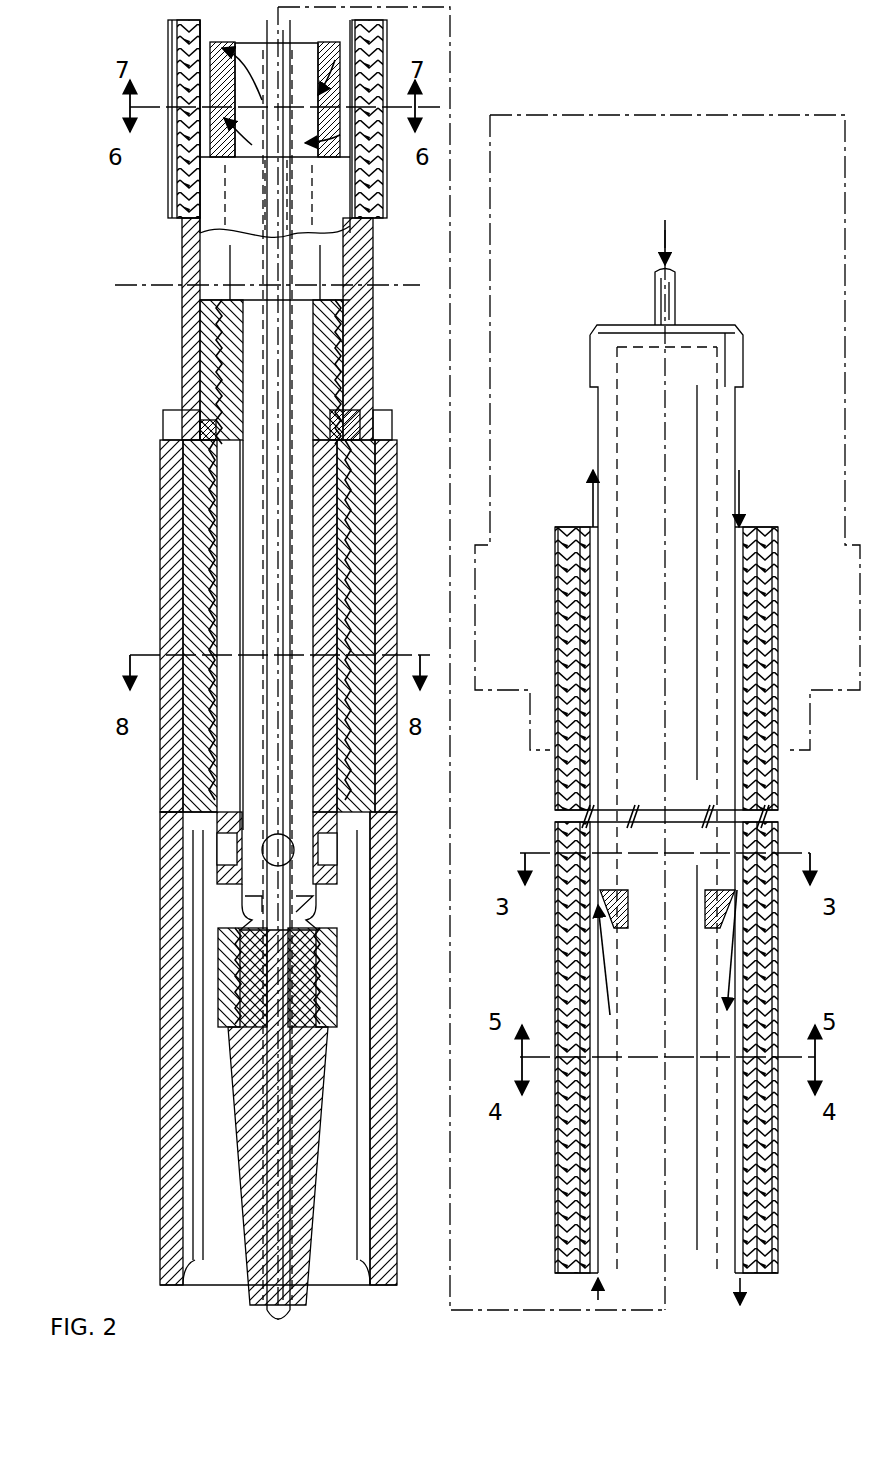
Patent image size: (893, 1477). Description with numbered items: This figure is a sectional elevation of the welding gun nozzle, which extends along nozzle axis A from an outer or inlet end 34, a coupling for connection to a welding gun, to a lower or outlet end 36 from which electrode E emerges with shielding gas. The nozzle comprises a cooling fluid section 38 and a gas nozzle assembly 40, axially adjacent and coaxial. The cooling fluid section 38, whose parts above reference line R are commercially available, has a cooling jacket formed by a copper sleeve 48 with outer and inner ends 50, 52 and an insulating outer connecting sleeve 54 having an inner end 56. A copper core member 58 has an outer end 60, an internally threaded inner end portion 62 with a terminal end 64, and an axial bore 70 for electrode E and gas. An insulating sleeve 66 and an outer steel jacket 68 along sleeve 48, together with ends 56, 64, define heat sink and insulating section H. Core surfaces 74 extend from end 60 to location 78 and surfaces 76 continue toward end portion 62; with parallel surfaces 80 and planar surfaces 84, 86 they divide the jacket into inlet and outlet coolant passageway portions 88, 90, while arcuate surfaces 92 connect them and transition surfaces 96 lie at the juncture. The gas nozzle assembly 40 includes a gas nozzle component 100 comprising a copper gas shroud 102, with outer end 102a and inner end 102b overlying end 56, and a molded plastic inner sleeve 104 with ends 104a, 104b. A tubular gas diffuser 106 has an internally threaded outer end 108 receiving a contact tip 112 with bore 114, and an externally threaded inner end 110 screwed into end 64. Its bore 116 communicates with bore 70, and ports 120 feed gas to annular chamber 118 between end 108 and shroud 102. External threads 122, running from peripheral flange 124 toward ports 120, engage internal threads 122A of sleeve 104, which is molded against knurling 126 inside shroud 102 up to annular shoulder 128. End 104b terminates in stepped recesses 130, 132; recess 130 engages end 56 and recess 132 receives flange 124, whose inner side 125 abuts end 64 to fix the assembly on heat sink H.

The outer or inlet end 34 is at (690, 100).
The lower or outlet end 36 is at (348, 1298).
The cooling fluid section 38 is at (105, 150).
The gas nozzle assembly 40 is at (70, 385).
The copper sleeve 48 is at (365, 115).
The axially outer end of sleeve 48 50 is at (580, 528).
The axially inner end of sleeve 48 52 is at (360, 182).
The outer connecting sleeve 54 is at (195, 300).
The inner end of sleeve 54 56 is at (185, 405).
The copper core member 58 is at (588, 345).
The axially outer end of core member 60 is at (745, 368).
The axially inner end portion of core member 62 is at (215, 190).
The terminal end of end portion 62 64 is at (352, 425).
The insulating sleeve 66 is at (388, 92).
The outer steel jacket 68 is at (385, 42).
The bore 70 is at (236, 240).
The first pair of outer surfaces 74 is at (690, 520).
The second pair of outer surfaces 76 is at (260, 42).
The location intermediate outer and inner ends 78 is at (580, 855).
The opposed parallel surfaces 80 is at (598, 435).
The planar surface 84 is at (598, 1250).
The planar surface 86 is at (710, 1180).
The inlet coolant passageway portion 88 is at (385, 27).
The outlet coolant passageway portion 90 is at (168, 27).
The arcuate surfaces 92 is at (325, 142).
The transition surfaces 96 is at (715, 905).
The gas nozzle component 100 is at (160, 620).
The outer cylindrical gas shroud 102 is at (165, 900).
The axially outer end of shroud 102a is at (165, 1265).
The axially inner end of shroud 102b is at (165, 455).
The inner sleeve 104 is at (350, 597).
The axially outer end of sleeve 104 104a is at (200, 808).
The axially inner end of sleeve 104 104b is at (160, 418).
The tubular gas diffuser 106 is at (330, 748).
The internally threaded axially outer end of diffuser 108 is at (225, 980).
The externally threaded axially inner end of diffuser 110 is at (335, 342).
The copper contact tip 112 is at (240, 1050).
The bore of contact tip 114 is at (280, 1120).
The bore of diffuser 116 is at (245, 780).
The annular chamber 118 is at (355, 918).
The radially extending ports 120 is at (342, 848).
The external threads 122 is at (345, 552).
The internal threads of sleeve 104 122A is at (190, 575).
The peripheral flange 124 is at (350, 492).
The axially inner side of flange 125 is at (178, 437).
The knurling 126 is at (180, 748).
The annular shoulder 128 is at (185, 530).
The recess 130 is at (355, 425).
The recess 132 is at (345, 462).
The electrode E is at (285, 262).
The nozzle axis A is at (450, 772).
The reference line R is at (130, 290).
The heat sink and insulating section H is at (165, 335).